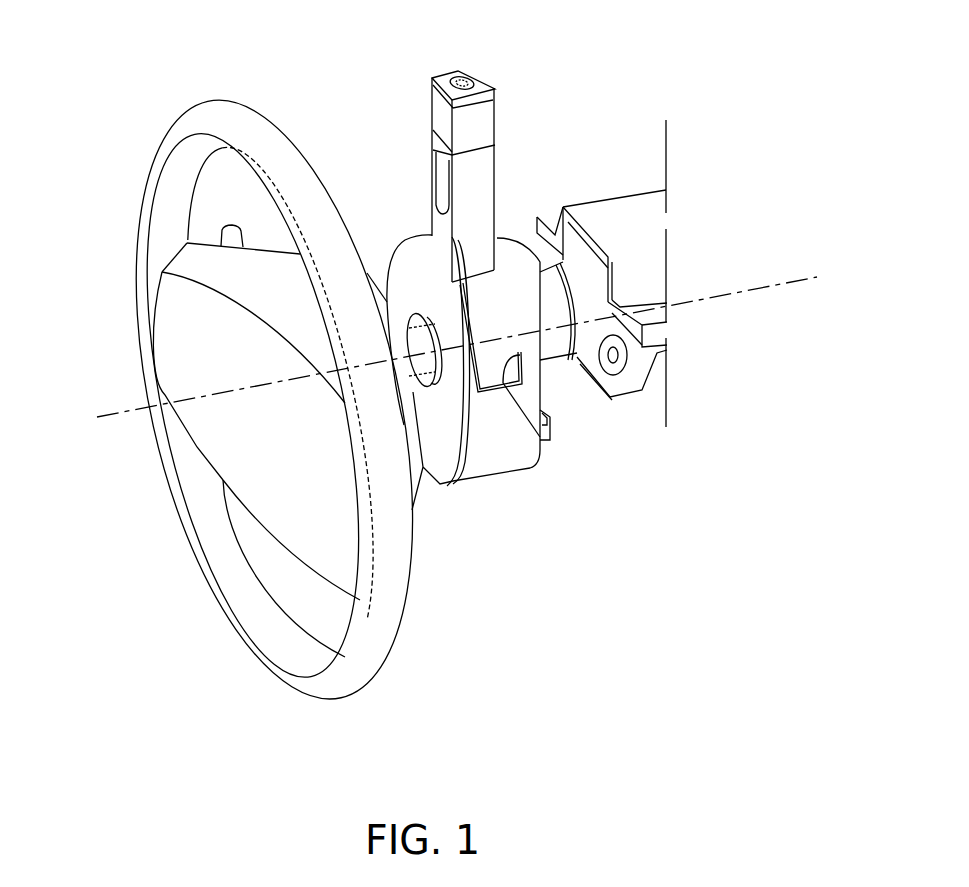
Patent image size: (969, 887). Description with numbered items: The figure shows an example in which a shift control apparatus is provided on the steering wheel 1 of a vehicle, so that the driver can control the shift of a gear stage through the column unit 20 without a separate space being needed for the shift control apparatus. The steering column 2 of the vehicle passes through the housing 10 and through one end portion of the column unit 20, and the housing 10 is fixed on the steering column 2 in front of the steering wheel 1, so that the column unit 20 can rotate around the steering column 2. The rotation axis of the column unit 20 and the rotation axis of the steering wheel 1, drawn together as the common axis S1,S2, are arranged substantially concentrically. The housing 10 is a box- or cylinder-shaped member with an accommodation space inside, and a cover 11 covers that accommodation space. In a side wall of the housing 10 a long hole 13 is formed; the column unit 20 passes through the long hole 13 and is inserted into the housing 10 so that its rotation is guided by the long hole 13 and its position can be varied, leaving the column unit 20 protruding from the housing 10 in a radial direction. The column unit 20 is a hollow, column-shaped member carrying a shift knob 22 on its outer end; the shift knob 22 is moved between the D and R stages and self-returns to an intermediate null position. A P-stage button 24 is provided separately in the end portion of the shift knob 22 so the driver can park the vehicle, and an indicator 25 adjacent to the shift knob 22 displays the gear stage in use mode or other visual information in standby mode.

The steering wheel 1 is at (220, 100).
The steering column 2 is at (575, 385).
The housing 10 is at (487, 457).
The cover 11 is at (438, 475).
The long hole 13 is at (540, 440).
The column unit 20 is at (487, 176).
The shift knob 22 is at (490, 105).
The P-stage button 24 is at (462, 72).
The indicator 25 is at (440, 183).
The rotation axes of the column unit and steering wheel S1,S2 is at (422, 355).